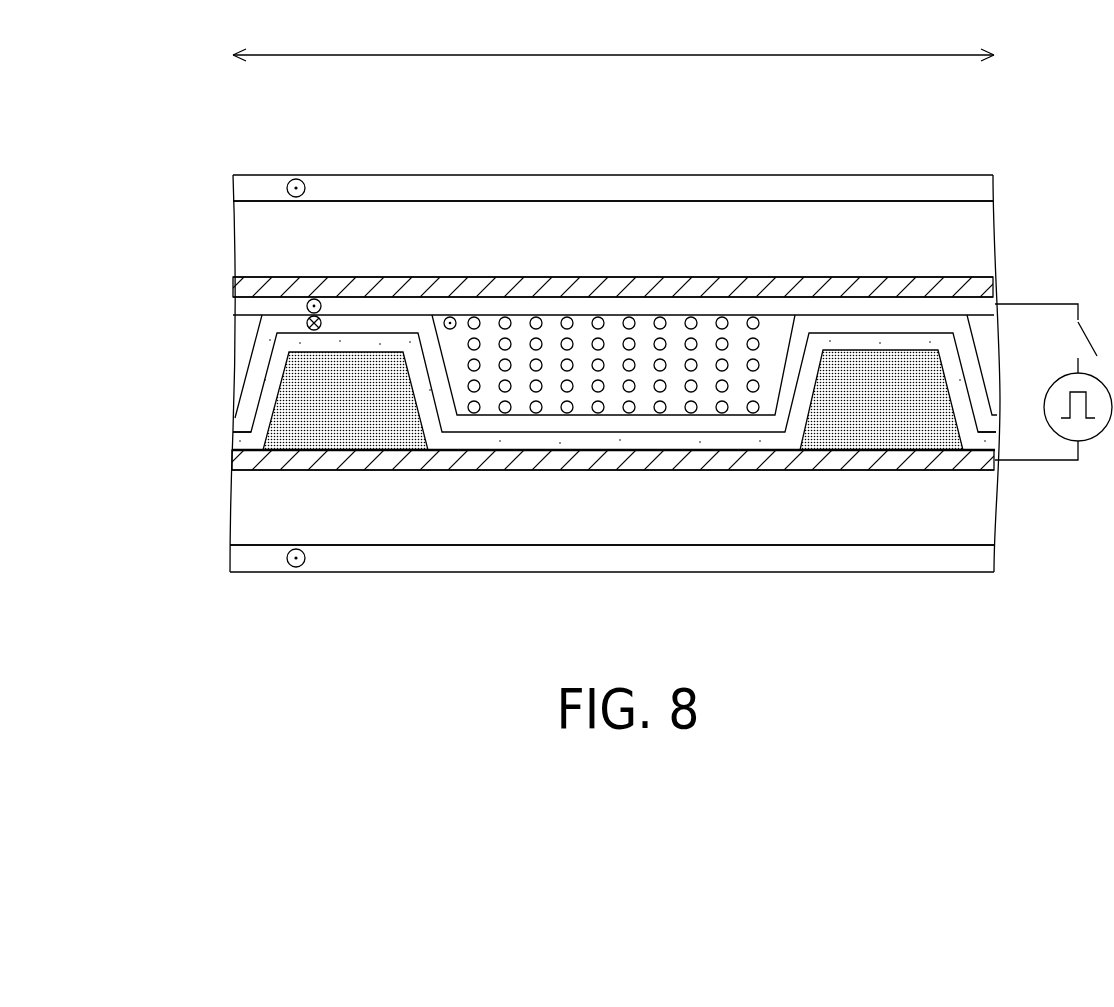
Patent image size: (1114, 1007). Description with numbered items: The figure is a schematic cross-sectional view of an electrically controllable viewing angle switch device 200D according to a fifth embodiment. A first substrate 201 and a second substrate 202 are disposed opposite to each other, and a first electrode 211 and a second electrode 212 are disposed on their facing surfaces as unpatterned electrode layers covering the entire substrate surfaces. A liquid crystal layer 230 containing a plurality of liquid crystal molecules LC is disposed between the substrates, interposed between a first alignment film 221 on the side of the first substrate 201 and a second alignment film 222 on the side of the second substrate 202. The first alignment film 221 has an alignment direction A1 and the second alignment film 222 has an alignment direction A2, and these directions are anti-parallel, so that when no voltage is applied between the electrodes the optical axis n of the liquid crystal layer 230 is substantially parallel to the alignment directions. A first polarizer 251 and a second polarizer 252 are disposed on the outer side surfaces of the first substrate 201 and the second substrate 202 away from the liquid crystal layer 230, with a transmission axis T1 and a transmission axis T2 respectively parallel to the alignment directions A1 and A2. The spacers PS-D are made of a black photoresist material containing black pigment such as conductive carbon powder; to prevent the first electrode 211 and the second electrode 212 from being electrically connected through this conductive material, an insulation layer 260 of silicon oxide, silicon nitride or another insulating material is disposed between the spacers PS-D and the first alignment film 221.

The electrically controllable viewing angle switch device 200D is at (1053, 678).
The second polarizer 252 is at (252, 185).
The second substrate 202 is at (250, 233).
The second electrode 212 is at (257, 287).
The second alignment film 222 is at (252, 303).
The liquid crystal layer 230 is at (240, 363).
The first alignment film 221 is at (235, 423).
The insulation layer 260 is at (235, 442).
The spacer PS-D is at (883, 430).
The first electrode 211 is at (240, 460).
The first substrate 201 is at (253, 524).
The first polarizer 251 is at (255, 559).
The transmission axis T2 is at (306, 186).
The transmission axis T1 is at (306, 560).
The alignment direction A1 is at (307, 322).
The alignment direction A2 is at (321, 306).
The optical axis n is at (449, 316).
The liquid crystal molecules LC is at (598, 317).